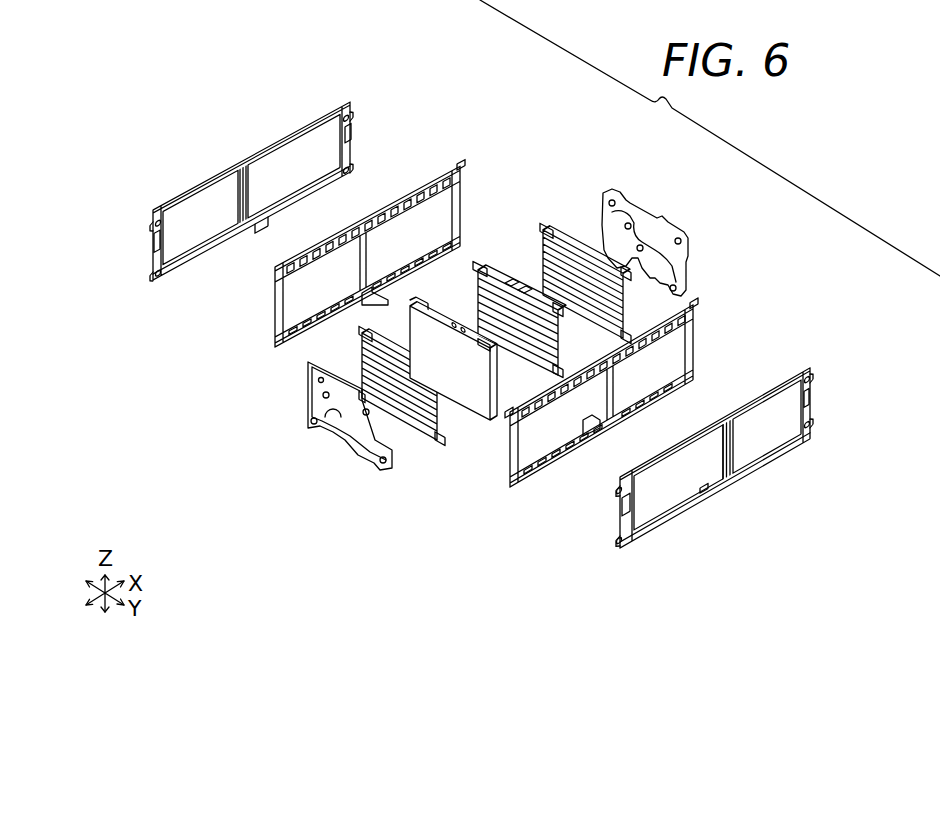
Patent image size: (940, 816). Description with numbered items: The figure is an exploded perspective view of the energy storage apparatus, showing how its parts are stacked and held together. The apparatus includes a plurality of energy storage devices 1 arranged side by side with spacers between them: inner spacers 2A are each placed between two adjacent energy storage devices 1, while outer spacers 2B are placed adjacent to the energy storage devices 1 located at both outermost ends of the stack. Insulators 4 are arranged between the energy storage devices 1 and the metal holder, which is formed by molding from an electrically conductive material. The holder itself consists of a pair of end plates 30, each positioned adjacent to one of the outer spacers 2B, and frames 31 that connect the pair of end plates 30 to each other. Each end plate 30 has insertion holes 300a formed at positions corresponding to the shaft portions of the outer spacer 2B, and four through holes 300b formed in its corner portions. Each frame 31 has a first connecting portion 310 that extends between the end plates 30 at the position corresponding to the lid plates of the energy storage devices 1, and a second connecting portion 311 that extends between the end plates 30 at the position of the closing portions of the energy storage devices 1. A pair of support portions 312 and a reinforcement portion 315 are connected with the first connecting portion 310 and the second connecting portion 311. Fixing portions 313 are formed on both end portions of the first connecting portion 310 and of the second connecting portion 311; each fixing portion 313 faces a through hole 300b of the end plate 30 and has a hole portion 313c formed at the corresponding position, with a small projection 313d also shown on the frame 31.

The energy storage device 1 is at (467, 419).
The inner spacer 2A is at (501, 256).
The outer spacer 2B is at (569, 214).
The insulator 4 is at (255, 351).
The end plate 30 is at (656, 202).
The insertion hole 300a is at (326, 398).
The through hole 300b is at (310, 377).
The frame 31 is at (470, 334).
The first connecting portion 310 is at (253, 150).
The second connecting portion 311 is at (227, 245).
The support portion 312 is at (362, 136).
The fixing portion 313 is at (355, 112).
The hole portion 313c is at (330, 112).
The projection 313d is at (342, 175).
The reinforcement portion 315 is at (245, 178).